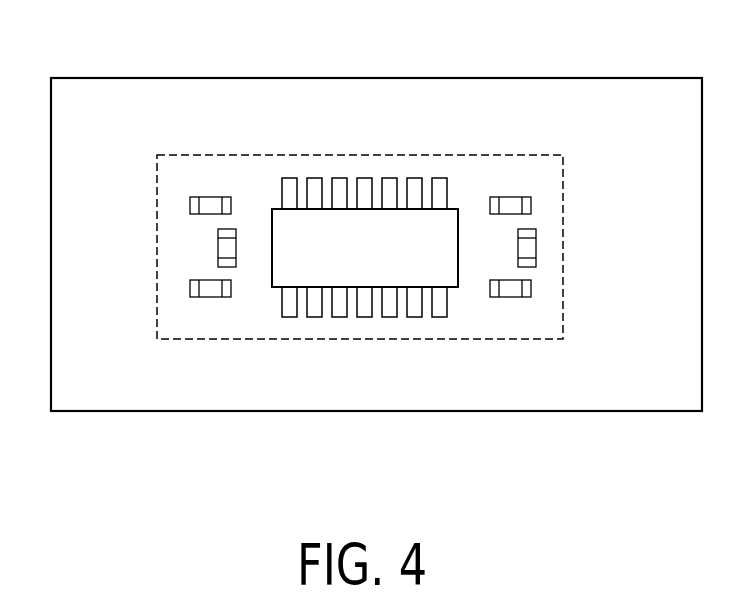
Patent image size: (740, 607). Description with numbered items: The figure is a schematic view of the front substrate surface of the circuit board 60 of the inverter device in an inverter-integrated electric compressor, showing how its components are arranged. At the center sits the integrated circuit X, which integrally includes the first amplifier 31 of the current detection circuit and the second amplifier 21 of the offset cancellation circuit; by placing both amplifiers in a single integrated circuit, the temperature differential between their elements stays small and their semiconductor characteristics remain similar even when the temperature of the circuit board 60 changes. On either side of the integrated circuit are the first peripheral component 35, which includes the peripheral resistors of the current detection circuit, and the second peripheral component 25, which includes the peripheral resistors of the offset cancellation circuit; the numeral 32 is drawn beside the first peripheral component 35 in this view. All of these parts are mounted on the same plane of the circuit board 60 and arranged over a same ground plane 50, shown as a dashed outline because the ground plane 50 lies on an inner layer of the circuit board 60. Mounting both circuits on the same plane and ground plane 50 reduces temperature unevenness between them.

The circuit board 60 is at (129, 411).
The ground plane 50 is at (250, 339).
The electronic component 32 is at (160, 165).
The first peripheral component 35 is at (202, 247).
The second peripheral component 25 is at (553, 241).
The first amplifier 31 is at (335, 207).
The second amplifier 21 is at (268, 207).